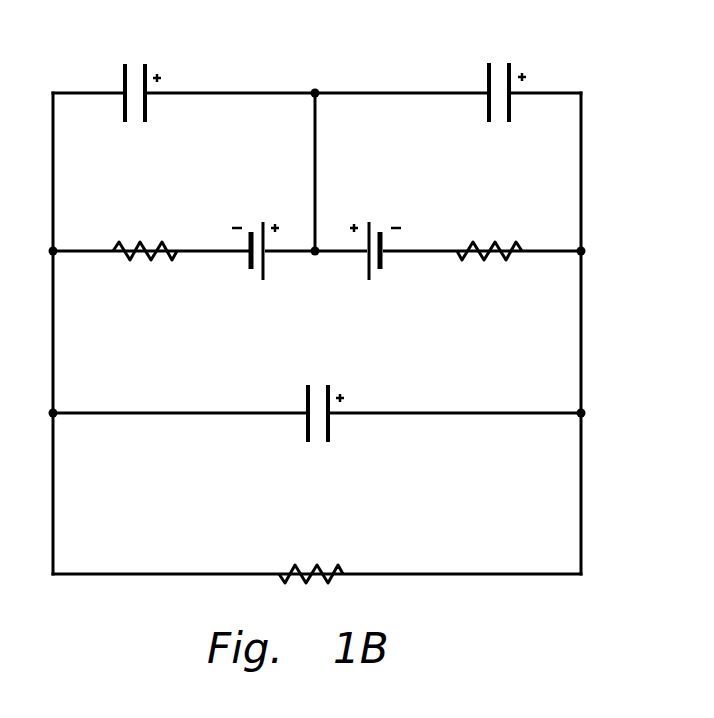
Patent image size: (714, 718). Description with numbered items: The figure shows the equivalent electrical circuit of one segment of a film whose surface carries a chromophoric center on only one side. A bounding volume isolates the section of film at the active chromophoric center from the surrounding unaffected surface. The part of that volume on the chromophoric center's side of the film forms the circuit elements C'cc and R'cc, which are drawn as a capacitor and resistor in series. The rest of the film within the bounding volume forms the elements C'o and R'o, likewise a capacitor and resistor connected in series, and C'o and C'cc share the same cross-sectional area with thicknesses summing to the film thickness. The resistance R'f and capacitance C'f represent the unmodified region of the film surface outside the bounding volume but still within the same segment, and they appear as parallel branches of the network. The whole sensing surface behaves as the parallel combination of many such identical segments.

The capacitance of the rest of the film within the bounding volume C'o is at (115, 70).
The capacitance of the chromophoric center's side of the film C'cc is at (477, 68).
The resistance of the rest of the film within the bounding volume R'o is at (145, 217).
The resistance of the chromophoric center's side of the film R'cc is at (488, 217).
The capacitance of the unmodified film surface region C'f is at (298, 390).
The resistance of the unmodified film surface region R'f is at (311, 540).